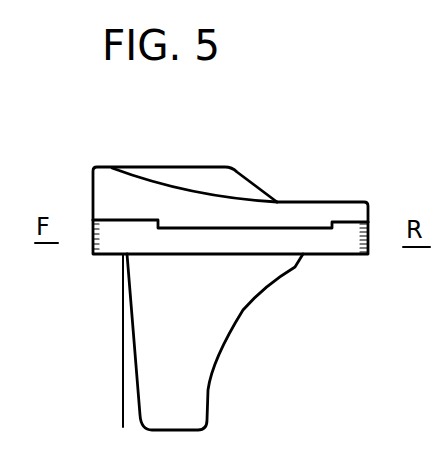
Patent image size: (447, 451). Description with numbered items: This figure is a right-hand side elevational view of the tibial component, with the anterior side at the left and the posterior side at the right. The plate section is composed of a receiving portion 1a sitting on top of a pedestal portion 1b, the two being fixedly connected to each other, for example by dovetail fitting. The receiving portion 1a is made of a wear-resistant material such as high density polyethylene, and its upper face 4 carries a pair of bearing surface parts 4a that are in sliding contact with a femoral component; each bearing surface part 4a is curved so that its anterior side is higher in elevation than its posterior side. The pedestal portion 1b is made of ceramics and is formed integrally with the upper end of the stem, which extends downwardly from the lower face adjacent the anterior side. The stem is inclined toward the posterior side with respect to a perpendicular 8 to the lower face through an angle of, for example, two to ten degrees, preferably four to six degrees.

The upper face 4 is at (165, 167).
The bearing surface part 4a is at (200, 193).
The receiving portion 1a is at (310, 217).
The pedestal portion 1b is at (327, 245).
The perpendicular 8 is at (122, 315).